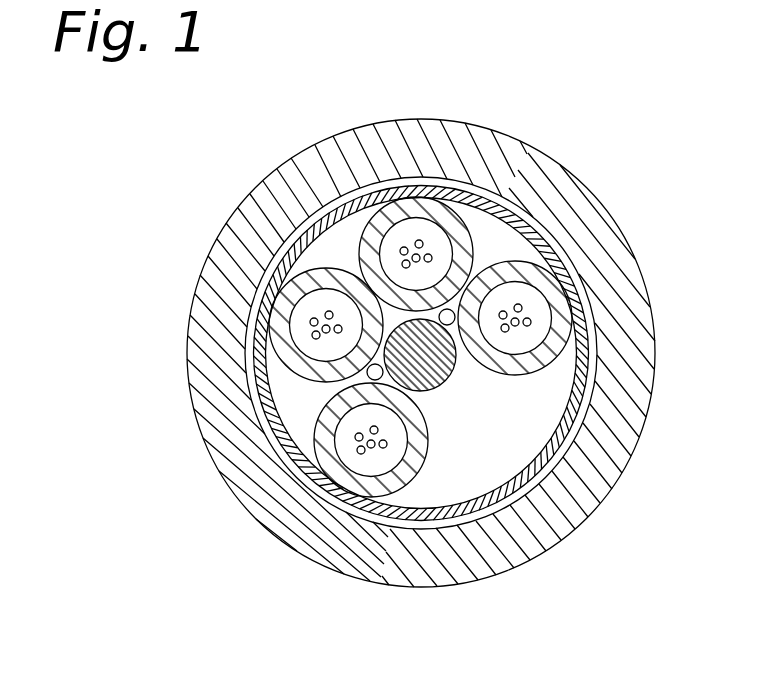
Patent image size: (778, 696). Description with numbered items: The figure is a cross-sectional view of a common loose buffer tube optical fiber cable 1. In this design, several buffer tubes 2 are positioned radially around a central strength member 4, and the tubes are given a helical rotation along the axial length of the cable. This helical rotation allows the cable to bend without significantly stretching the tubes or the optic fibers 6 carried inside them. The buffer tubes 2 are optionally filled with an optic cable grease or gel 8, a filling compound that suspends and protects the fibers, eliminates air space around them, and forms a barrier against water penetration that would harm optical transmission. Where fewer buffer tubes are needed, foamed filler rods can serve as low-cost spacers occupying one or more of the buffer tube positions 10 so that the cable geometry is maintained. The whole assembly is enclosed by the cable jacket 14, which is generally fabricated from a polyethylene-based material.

The optical fiber cable 1 is at (460, 362).
The buffer tubes 2 is at (595, 257).
The central strength member 4 is at (549, 398).
The optic fibers 6 is at (587, 304).
The optic cable grease or gel 8 is at (606, 318).
The buffer tube positions 10 is at (421, 428).
The cable jacket 14 is at (421, 382).